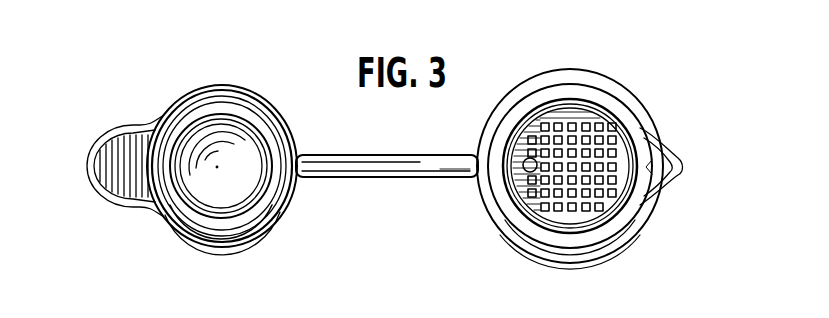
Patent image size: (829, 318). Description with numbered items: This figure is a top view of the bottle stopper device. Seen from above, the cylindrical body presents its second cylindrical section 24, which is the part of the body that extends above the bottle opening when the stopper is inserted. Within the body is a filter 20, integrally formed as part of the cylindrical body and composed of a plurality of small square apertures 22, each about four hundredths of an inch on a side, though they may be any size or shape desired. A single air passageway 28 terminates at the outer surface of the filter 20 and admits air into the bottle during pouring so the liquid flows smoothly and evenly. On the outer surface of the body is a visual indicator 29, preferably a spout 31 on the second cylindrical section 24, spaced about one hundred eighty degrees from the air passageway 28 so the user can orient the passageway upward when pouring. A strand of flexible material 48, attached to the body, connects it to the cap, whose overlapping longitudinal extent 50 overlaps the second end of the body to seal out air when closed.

The filter 20 is at (613, 140).
The apertures 22 is at (540, 205).
The second cylindrical section 24 is at (583, 84).
The air passageway 28 is at (503, 140).
The visual indicator 29 is at (676, 160).
The spout 31 is at (613, 252).
The strand of flexible material 48 is at (427, 155).
The overlapping longitudinal extent 50 is at (117, 182).